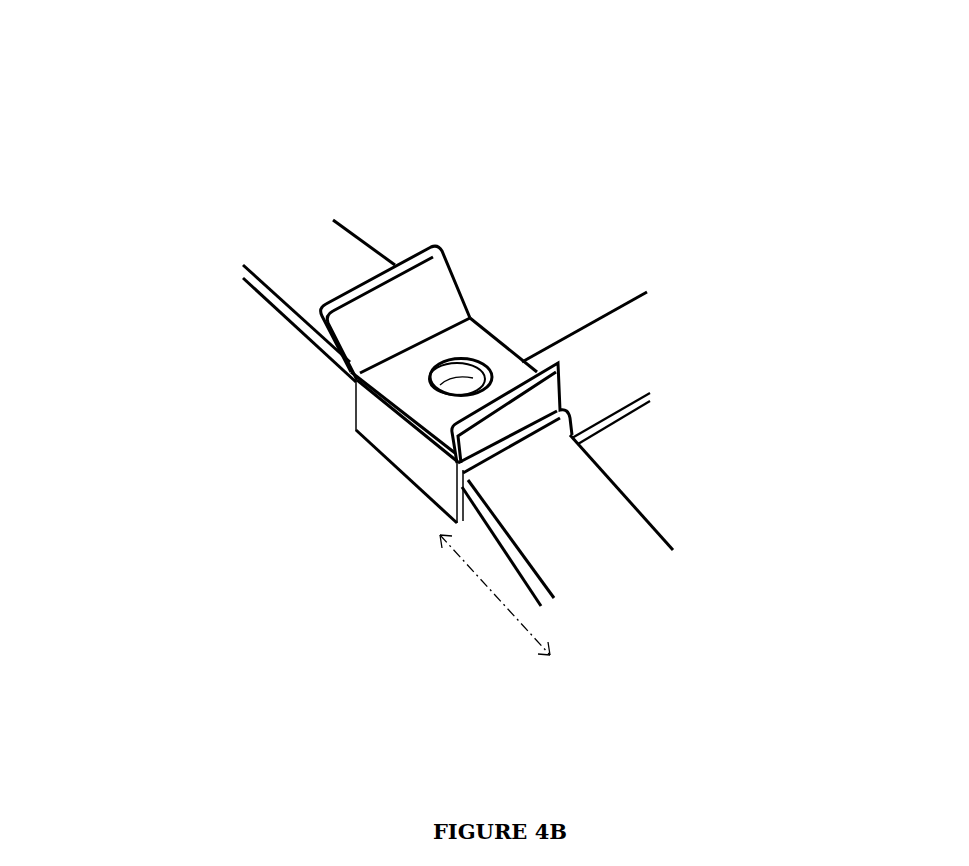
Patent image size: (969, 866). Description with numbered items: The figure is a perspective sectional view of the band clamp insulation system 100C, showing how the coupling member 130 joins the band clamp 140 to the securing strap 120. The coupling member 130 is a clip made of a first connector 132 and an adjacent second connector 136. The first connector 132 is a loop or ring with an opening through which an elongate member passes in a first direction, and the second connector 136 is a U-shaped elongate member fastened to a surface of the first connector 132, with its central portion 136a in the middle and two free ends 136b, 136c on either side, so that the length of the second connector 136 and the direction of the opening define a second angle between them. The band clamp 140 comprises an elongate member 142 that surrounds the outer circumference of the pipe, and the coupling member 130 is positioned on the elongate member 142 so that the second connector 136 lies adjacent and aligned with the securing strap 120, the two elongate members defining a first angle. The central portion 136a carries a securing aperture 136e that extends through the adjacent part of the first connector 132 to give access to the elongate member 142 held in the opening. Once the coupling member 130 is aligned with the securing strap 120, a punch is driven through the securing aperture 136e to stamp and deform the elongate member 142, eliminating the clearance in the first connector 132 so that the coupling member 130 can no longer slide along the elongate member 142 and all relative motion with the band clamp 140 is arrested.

The band clamp insulation system 100C is at (748, 123).
The securing strap 120 is at (602, 352).
The coupling member 130 is at (372, 420).
The first connector 132 is at (405, 463).
The second connector 136 is at (365, 356).
The central portion 136a is at (479, 348).
The free end 136b is at (416, 294).
The free end 136c is at (562, 405).
The securing aperture 136e is at (457, 385).
The band clamp 140 is at (565, 493).
The elongate member 142 is at (387, 403).